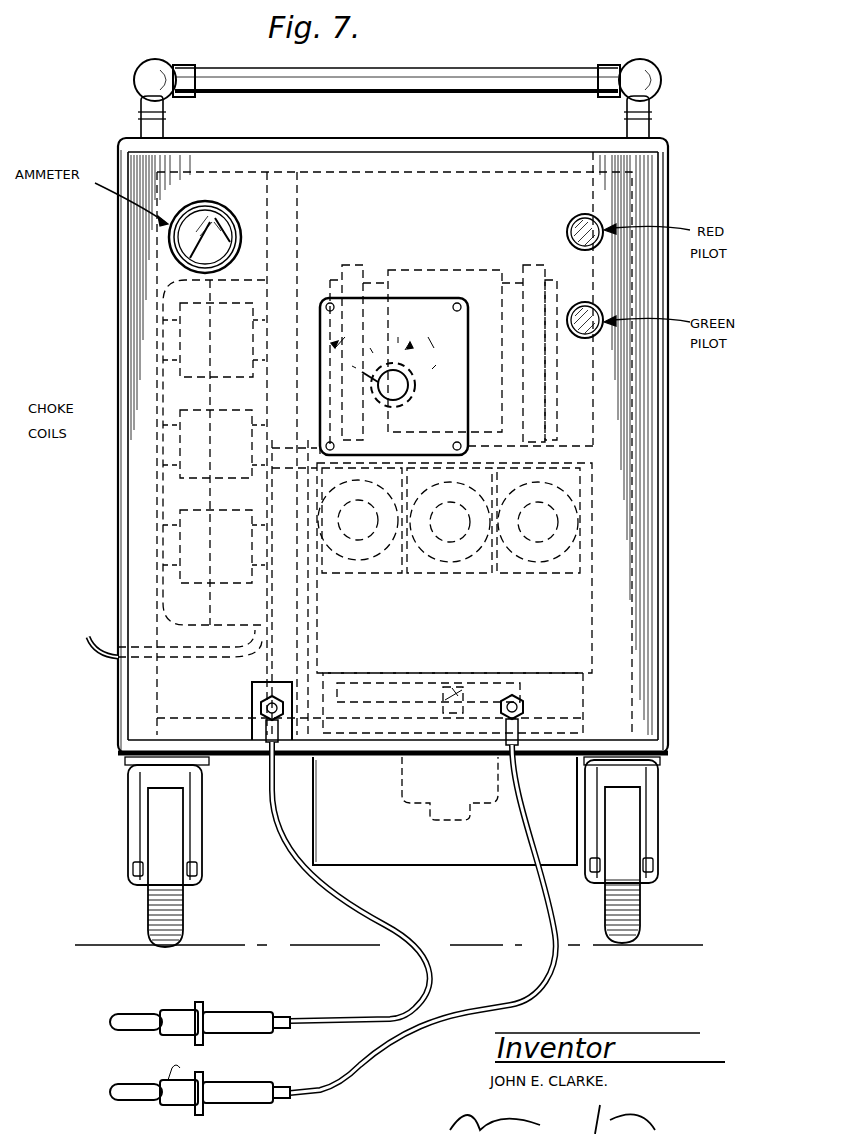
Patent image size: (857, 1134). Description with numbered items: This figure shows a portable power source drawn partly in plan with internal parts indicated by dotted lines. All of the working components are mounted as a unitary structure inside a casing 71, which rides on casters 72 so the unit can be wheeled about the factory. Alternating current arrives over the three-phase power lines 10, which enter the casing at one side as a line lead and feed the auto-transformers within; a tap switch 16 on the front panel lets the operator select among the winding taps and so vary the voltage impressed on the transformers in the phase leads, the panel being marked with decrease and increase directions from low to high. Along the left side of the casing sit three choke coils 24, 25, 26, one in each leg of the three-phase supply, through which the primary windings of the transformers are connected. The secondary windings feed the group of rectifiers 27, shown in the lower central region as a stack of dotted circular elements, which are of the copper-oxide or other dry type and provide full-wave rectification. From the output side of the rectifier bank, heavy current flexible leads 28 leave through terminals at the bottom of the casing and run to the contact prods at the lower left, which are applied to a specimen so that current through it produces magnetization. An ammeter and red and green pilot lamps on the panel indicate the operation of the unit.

The three-phase power lines 10 is at (98, 636).
The tap switch 16 is at (420, 392).
The choke coil 24 is at (105, 412).
The choke coil 25 is at (105, 430).
The choke coil 26 is at (105, 440).
The rectifiers 27 is at (490, 553).
The heavy current flexible leads 28 is at (392, 932).
The casing 71 is at (668, 585).
The casters 72 is at (165, 903).